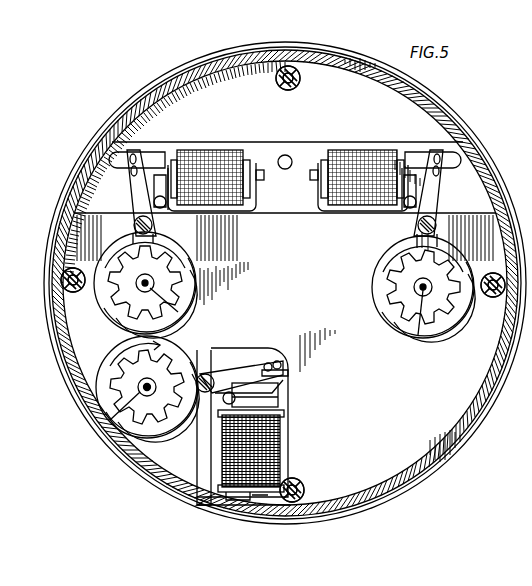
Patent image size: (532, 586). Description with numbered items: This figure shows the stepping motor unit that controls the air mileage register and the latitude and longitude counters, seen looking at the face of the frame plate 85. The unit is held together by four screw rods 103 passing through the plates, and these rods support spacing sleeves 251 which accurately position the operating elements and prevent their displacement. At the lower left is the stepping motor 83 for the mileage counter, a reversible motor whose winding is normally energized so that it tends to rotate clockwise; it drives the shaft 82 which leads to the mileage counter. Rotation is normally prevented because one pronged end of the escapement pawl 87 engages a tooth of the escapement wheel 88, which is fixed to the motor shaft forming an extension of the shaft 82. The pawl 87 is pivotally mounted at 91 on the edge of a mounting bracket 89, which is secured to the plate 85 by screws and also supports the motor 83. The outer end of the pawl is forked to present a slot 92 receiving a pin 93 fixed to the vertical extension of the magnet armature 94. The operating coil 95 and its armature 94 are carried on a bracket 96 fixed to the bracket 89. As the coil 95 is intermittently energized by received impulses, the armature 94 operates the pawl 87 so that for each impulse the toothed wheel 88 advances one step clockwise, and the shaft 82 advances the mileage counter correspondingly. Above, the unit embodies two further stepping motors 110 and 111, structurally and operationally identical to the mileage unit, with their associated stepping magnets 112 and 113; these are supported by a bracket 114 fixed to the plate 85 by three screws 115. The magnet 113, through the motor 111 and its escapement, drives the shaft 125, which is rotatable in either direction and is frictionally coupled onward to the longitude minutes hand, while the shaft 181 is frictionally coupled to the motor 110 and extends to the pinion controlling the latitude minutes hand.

The shaft 82 is at (110, 420).
The stepping motor 83 is at (112, 358).
The frame plate 85 is at (408, 103).
The escapement pawl 87 is at (248, 368).
The escapement wheel 88 is at (108, 372).
The mounting bracket 89 is at (200, 440).
The pivot 91 is at (208, 374).
The slot 92 is at (288, 373).
The pin 93 is at (272, 362).
The magnet armature 94 is at (280, 393).
The operating coil 95 is at (282, 446).
The bracket 96 is at (228, 503).
The screw rods 103 is at (300, 72).
The stepping motor 110 is at (195, 293).
The stepping motor 111 is at (384, 262).
The stepping magnet 112 is at (207, 158).
The stepping magnet 113 is at (363, 158).
The bracket 114 is at (299, 210).
The screws 115 is at (292, 157).
The shaft 125 is at (418, 335).
The shaft 181 is at (190, 311).
The spacing sleeves 251 is at (303, 80).